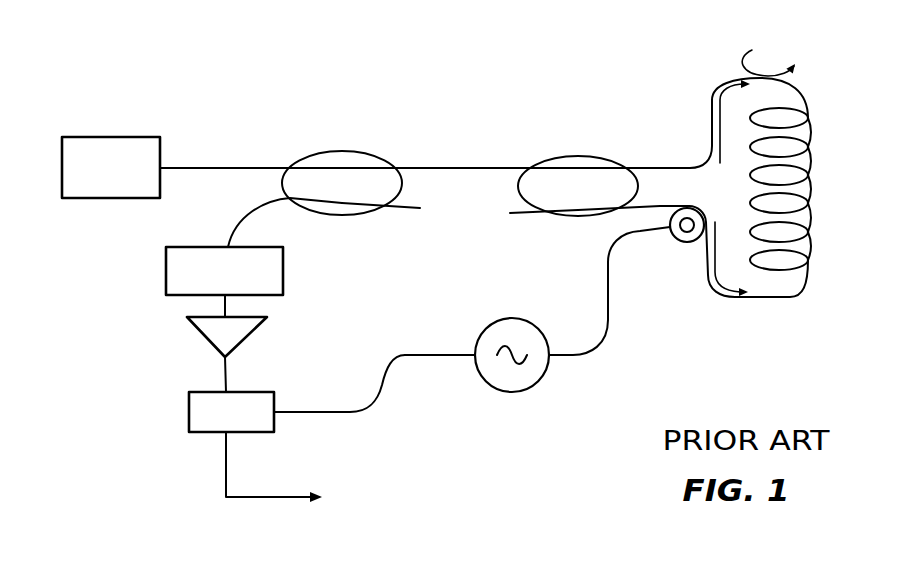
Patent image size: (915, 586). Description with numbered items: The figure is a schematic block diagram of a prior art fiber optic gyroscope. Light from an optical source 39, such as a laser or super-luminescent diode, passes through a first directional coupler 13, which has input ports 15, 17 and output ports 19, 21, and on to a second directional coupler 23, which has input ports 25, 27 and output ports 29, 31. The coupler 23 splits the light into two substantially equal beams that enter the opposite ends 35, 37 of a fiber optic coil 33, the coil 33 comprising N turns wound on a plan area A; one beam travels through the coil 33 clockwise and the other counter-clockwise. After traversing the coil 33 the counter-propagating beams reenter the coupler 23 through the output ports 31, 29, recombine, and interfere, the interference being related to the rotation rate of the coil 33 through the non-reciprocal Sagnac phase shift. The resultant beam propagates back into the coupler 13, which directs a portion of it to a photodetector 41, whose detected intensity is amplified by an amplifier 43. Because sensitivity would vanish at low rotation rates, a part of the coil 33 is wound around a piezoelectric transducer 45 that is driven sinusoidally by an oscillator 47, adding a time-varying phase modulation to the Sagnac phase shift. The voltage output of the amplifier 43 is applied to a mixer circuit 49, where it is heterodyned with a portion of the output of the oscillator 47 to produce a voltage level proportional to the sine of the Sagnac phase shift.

The first directional coupler 13 is at (345, 152).
The input port 15 is at (290, 168).
The input port 17 is at (290, 198).
The output port 19 is at (398, 168).
The output port 21 is at (388, 206).
The second directional coupler 23 is at (572, 156).
The input port 25 is at (528, 168).
The input port 27 is at (535, 212).
The output port 29 is at (632, 168).
The output port 31 is at (628, 204).
The fiber optic coil 33 is at (816, 173).
The end of fiber optic coil 35 is at (682, 168).
The end of fiber optic coil 37 is at (676, 203).
The optical source 39 is at (122, 137).
The photodetector 41 is at (166, 272).
The amplifier 43 is at (200, 330).
The piezoelectric transducer 45 is at (687, 243).
The oscillator 47 is at (518, 392).
The mixer circuit 49 is at (189, 412).